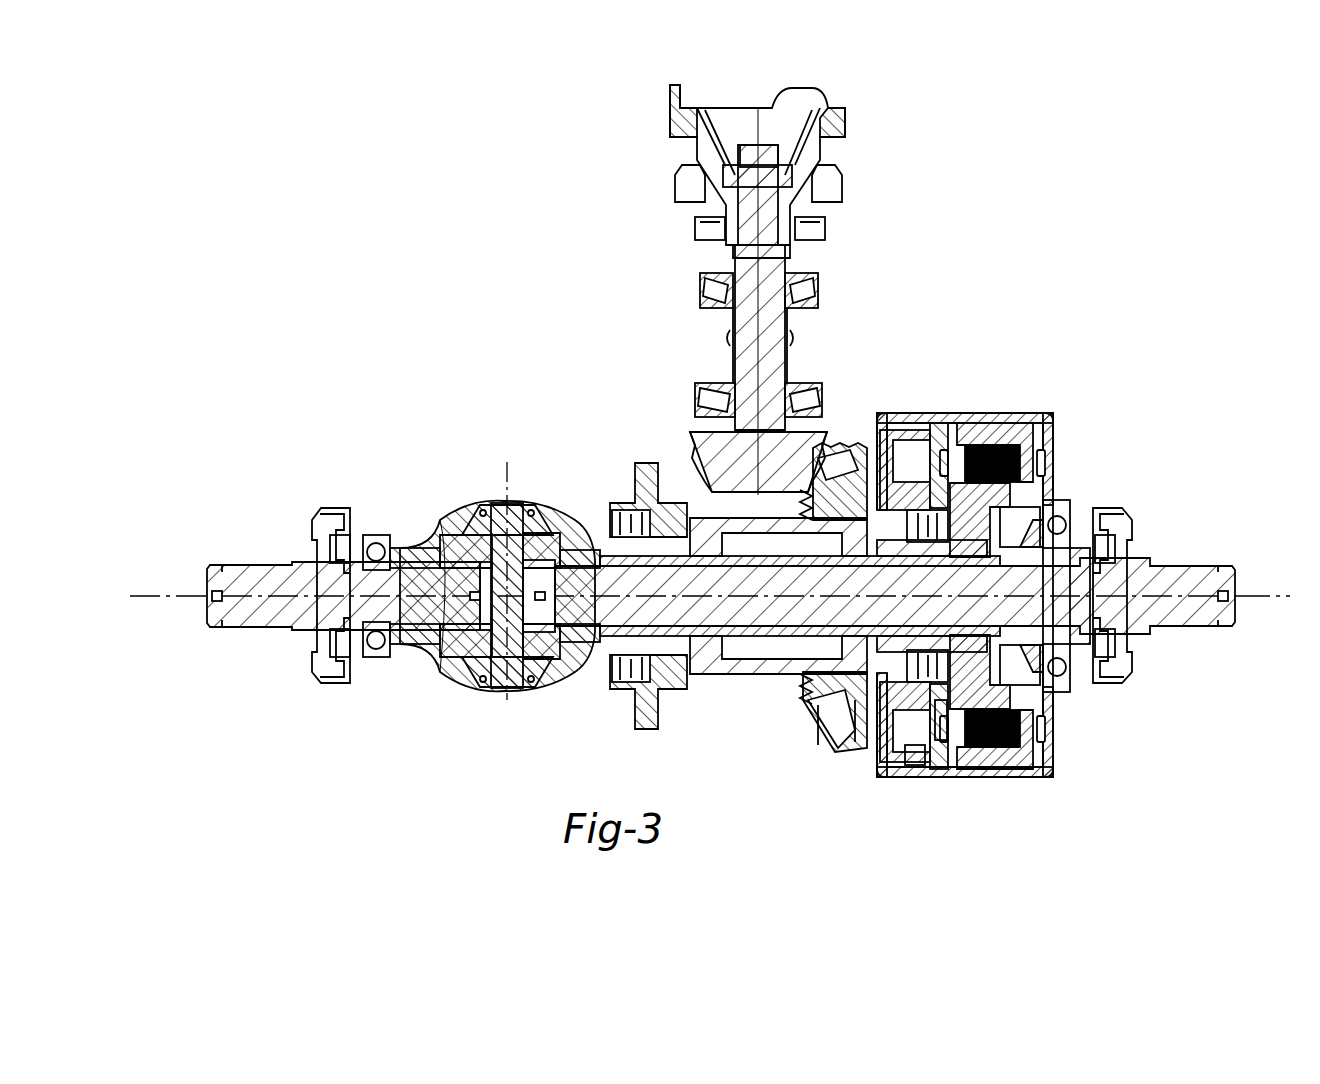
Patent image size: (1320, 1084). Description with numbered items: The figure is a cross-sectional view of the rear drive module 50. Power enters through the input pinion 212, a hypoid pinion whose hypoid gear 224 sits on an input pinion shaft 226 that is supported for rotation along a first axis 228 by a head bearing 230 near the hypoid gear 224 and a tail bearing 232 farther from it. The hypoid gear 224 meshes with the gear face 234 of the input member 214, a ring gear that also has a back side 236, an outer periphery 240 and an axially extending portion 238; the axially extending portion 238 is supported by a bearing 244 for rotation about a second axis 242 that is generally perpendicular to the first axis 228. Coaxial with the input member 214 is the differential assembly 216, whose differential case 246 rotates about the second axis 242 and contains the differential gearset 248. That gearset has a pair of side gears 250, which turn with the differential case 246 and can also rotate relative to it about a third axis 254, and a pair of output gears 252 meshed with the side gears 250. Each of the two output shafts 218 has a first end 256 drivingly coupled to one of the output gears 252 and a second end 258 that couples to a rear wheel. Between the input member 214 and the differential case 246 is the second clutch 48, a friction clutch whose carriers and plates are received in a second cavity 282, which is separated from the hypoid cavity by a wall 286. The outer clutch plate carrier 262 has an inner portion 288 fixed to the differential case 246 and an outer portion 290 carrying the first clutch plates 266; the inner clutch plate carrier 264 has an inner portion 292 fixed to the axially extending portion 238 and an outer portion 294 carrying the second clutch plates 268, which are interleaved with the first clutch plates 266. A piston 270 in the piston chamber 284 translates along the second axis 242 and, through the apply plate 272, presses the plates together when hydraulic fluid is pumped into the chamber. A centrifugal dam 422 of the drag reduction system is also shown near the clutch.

The rear drive module 50 is at (456, 284).
The input pinion 212 is at (800, 232).
The input pinion shaft 226 is at (740, 262).
The tail bearing 232 is at (702, 298).
The first axis 228 is at (770, 340).
The head bearing 230 is at (698, 397).
The hypoid gear 224 is at (703, 438).
The input member 214 is at (842, 448).
The differential assembly 216 is at (444, 503).
The differential gearset 248 is at (478, 526).
The side gears 250 is at (528, 515).
The output gears 252 is at (553, 532).
The third axis 254 is at (505, 700).
The differential case 246 is at (536, 680).
The first end 256 is at (452, 553).
The output shafts 218 is at (240, 565).
The second end 258 is at (210, 580).
The second axis 242 is at (1250, 594).
The gear face 234 is at (808, 722).
The back side 236 is at (860, 730).
The outer periphery 240 is at (828, 740).
The bearing 244 is at (840, 630).
The centrifugal dam 422 is at (885, 628).
The axially extending portion 238 is at (975, 636).
The outer clutch plate carrier 262 is at (1025, 765).
The inner clutch plate carrier 264 is at (1058, 667).
The first clutch plates 266 is at (985, 762).
The second clutch plates 268 is at (1000, 760).
The piston 270 is at (918, 768).
The apply plate 272 is at (940, 742).
The second cavity 282 is at (1040, 422).
The second clutch 48 is at (1032, 440).
The piston chamber 284 is at (920, 440).
The wall 286 is at (888, 435).
The inner portion 288 is at (1080, 550).
The outer portion 290 is at (1015, 420).
The inner portion 292 is at (955, 553).
The outer portion 294 is at (1005, 520).